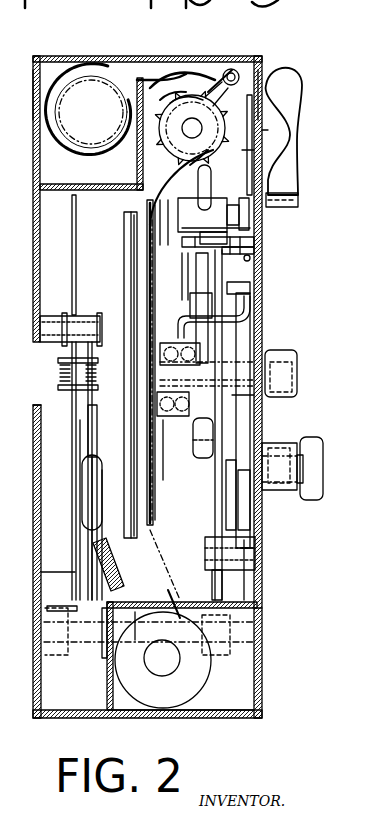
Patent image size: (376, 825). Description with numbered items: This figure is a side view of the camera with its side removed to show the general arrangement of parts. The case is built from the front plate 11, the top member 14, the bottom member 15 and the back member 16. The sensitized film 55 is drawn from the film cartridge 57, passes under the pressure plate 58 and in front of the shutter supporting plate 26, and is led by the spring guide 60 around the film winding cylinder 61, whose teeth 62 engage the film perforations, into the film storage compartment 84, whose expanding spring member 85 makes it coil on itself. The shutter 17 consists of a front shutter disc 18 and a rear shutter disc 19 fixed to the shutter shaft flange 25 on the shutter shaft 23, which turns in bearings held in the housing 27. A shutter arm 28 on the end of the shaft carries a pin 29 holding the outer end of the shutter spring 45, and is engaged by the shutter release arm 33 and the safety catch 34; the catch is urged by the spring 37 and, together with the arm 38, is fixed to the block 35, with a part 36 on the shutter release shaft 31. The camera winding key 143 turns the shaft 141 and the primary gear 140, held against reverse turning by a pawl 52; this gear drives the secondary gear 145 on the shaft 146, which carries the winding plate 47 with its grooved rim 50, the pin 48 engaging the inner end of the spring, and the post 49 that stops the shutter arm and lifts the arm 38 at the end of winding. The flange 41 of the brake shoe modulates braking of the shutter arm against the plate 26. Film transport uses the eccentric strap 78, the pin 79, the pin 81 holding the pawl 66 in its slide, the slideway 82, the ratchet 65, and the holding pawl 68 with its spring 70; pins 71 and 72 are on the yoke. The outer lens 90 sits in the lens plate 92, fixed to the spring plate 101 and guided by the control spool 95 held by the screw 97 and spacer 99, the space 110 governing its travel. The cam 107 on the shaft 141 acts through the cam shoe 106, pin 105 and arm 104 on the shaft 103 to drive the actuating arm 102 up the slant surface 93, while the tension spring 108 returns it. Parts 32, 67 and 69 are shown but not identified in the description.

The front plate 11 is at (33, 90).
The top member 14 is at (164, 100).
The bottom member 15 is at (212, 719).
The back member 16 is at (262, 612).
The shutter 17 is at (128, 226).
The front shutter disc 18 is at (131, 238).
The rear shutter disc 19 is at (134, 251).
The shutter shaft 23 is at (150, 408).
The shutter shaft flange 25 is at (138, 340).
The shutter supporting plate 26 is at (162, 488).
The housing 27 is at (172, 416).
The shutter arm 28 is at (205, 292).
The shutter arm pin 29 is at (240, 242).
The shutter release shaft 31 is at (230, 225).
The cam lobe 32 is at (285, 87).
The shutter release arm 33 is at (160, 211).
The safety catch 34 is at (272, 196).
The block 35 is at (205, 200).
The element on shutter release shaft 36 is at (232, 182).
The spring 37 is at (212, 172).
The arm 38 is at (280, 201).
The flange 41 is at (176, 286).
The shutter spring 45 is at (202, 282).
The winding plate 47 is at (300, 448).
The pin 48 is at (247, 378).
The post 49 is at (224, 266).
The grooved rim 50 is at (196, 450).
The pawl 52 is at (248, 500).
The sensitized film 55 is at (107, 88).
The film cartridge 57 is at (195, 672).
The pressure plate 58 is at (96, 533).
The spring guide 60 is at (178, 180).
The film winding cylinder 61 is at (183, 115).
The teeth 62 is at (195, 96).
The ratchet 65 is at (172, 118).
The pawl 66 is at (252, 135).
The side wall 67 is at (258, 92).
The pawl 68 is at (230, 69).
The pin 69 is at (235, 72).
The spring 70 is at (220, 82).
The pin 71 is at (245, 150).
The pin 72 is at (212, 78).
The eccentric strap 78 is at (230, 322).
The pin 79 is at (214, 338).
The pin 81 is at (251, 256).
The slideway 82 is at (242, 192).
The film storage compartment 84 is at (60, 80).
The expanding spring member 85 is at (83, 75).
The outer lens 90 is at (60, 380).
The lens plate 92 is at (85, 403).
The slant surface 93 is at (88, 438).
The lens control spool 95 is at (45, 318).
The screw 97 is at (42, 338).
The spacer 99 is at (58, 343).
The spring plate 101 is at (76, 495).
The actuating arm 102 is at (93, 517).
The shaft 103 is at (135, 640).
The arm 104 is at (216, 585).
The pin 105 is at (220, 563).
The cam shoe 106 is at (252, 532).
The cam 107 is at (230, 466).
The tension spring 108 is at (100, 608).
The space 110 is at (73, 320).
The primary gear 140 is at (246, 448).
The shaft 141 is at (260, 470).
The camera winding key 143 is at (312, 500).
The secondary gear 145 is at (246, 404).
The shaft 146 is at (270, 352).